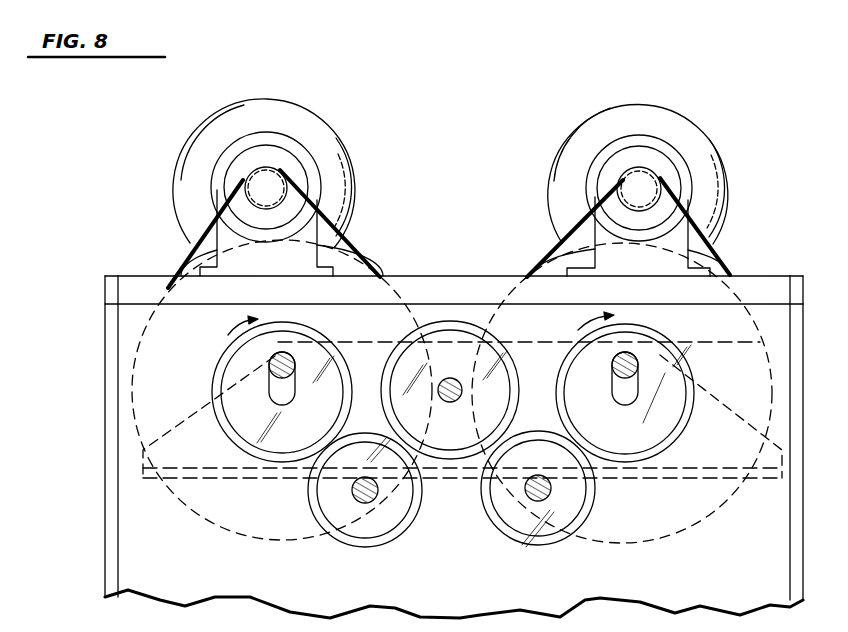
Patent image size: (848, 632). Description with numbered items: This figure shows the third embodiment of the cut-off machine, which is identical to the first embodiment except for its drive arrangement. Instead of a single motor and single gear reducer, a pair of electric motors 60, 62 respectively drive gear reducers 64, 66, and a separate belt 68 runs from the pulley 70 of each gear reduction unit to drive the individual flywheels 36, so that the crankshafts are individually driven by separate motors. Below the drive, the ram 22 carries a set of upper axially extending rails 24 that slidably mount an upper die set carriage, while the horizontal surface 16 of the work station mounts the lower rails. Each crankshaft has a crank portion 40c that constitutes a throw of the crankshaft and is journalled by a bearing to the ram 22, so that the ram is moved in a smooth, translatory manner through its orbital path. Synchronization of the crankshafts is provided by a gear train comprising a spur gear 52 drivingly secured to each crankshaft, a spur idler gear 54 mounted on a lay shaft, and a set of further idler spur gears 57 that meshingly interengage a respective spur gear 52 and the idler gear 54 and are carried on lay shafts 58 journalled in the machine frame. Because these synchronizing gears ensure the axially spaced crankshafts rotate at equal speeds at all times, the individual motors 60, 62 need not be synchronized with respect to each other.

The horizontal surface 16 is at (461, 399).
The ram 22 is at (160, 440).
The upper axially extending rails 24 is at (625, 393).
The flywheel 36 is at (210, 253).
The crank portion 40c is at (288, 352).
The spur gear 52 is at (225, 368).
The spur idler gear 54 is at (489, 342).
The further idler spur gear 57 is at (404, 528).
The lay shaft 58 is at (538, 476).
The electric motor 60 is at (317, 118).
The electric motor 62 is at (710, 132).
The gear reducer 64 is at (212, 165).
The gear reducer 66 is at (583, 170).
The belt 68 is at (177, 262).
The pulley 70 is at (280, 166).